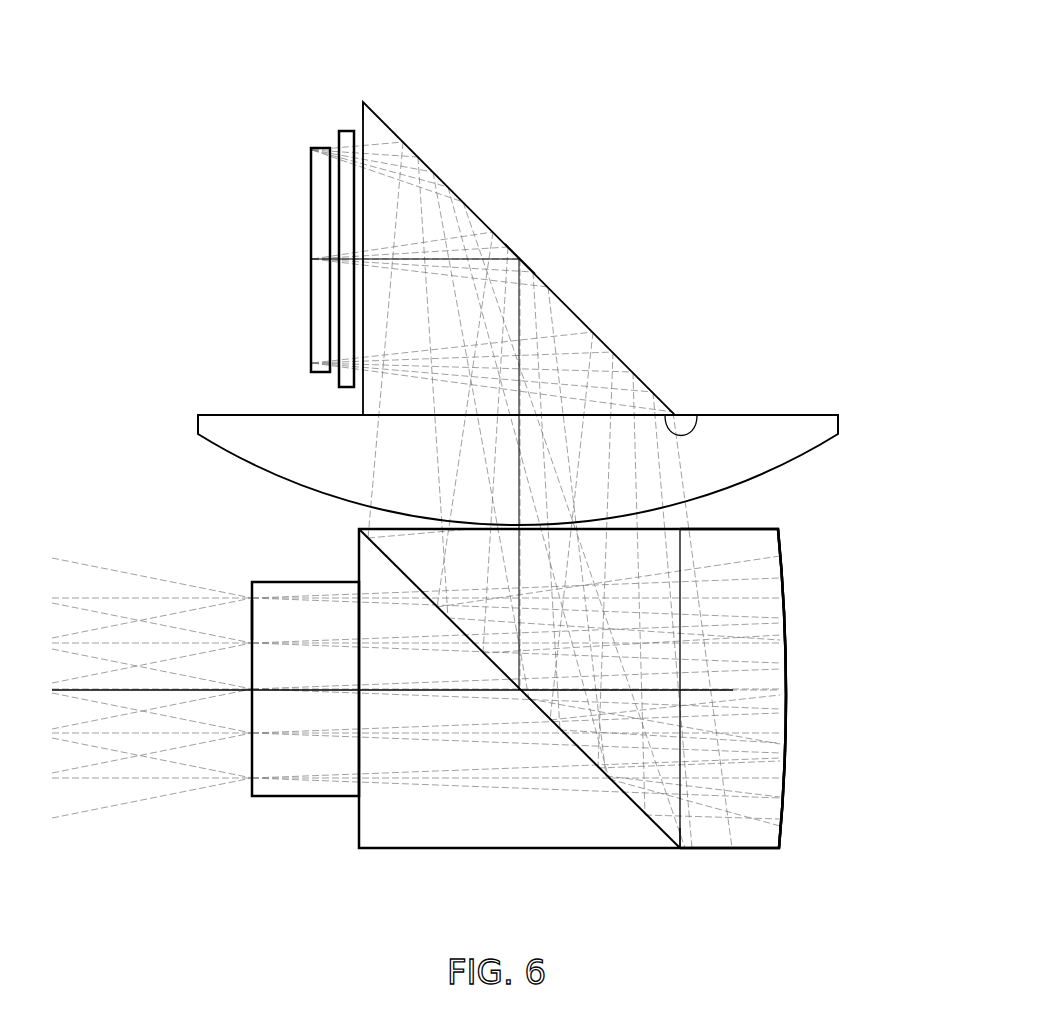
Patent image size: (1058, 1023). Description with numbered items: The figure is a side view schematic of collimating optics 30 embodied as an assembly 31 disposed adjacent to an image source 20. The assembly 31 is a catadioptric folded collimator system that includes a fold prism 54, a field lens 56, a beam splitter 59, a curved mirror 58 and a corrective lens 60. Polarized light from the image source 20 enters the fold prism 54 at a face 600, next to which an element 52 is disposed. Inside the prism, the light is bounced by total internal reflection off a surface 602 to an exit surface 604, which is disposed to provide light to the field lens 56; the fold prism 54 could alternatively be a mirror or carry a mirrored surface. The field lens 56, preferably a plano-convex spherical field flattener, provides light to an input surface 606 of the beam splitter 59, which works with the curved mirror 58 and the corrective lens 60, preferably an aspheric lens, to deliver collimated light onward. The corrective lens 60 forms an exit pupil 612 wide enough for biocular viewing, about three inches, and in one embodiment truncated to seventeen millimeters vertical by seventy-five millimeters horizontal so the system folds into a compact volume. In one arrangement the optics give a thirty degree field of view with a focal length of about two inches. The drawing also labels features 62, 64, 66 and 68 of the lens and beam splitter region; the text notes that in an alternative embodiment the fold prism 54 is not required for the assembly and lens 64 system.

The image source 20 is at (311, 196).
The element 52 is at (348, 130).
The fold prism 54 is at (565, 302).
The field lens 56 is at (838, 415).
The curved mirror 58 is at (783, 785).
The beam splitter 59 is at (527, 848).
The corrective lens 60 is at (268, 795).
The lens surface 62 is at (776, 558).
The lens 64 is at (680, 822).
The beam splitting surface 66 is at (622, 797).
The corner 68 is at (359, 828).
The face 600 is at (363, 102).
The surface 602 is at (518, 256).
The exit surface 604 is at (697, 416).
The input surface 606 is at (660, 529).
The exit pupil 612 is at (252, 617).
The collimating optics 30 is at (645, 138).
The assembly 31 is at (487, 128).